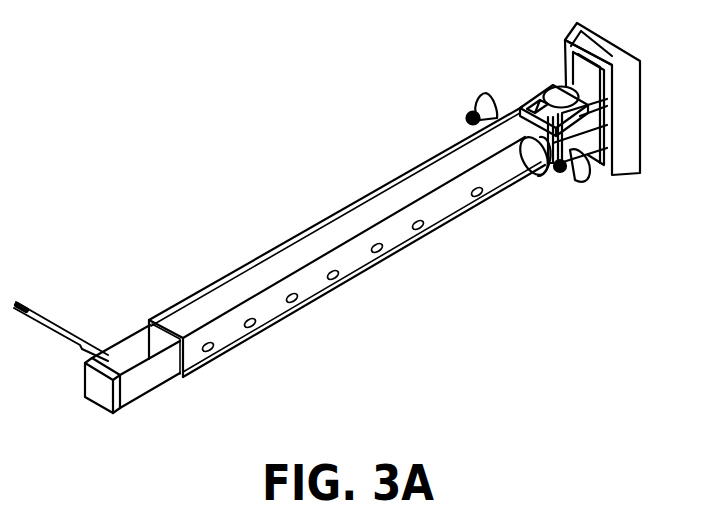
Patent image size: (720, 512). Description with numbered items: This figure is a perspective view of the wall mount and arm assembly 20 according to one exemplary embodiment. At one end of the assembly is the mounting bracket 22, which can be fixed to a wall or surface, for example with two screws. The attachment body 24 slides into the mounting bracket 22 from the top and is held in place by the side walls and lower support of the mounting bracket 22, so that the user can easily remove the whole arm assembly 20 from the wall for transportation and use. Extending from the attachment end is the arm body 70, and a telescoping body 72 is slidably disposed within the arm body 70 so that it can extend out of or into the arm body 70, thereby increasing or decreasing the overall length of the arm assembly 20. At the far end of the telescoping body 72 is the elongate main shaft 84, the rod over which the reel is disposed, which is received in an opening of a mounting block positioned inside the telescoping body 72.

The arm assembly 20 is at (125, 186).
The mounting bracket 22 is at (633, 95).
The attachment body 24 is at (594, 120).
The arm body 70 is at (367, 267).
The telescoping body 72 is at (157, 384).
The main shaft 84 is at (61, 303).